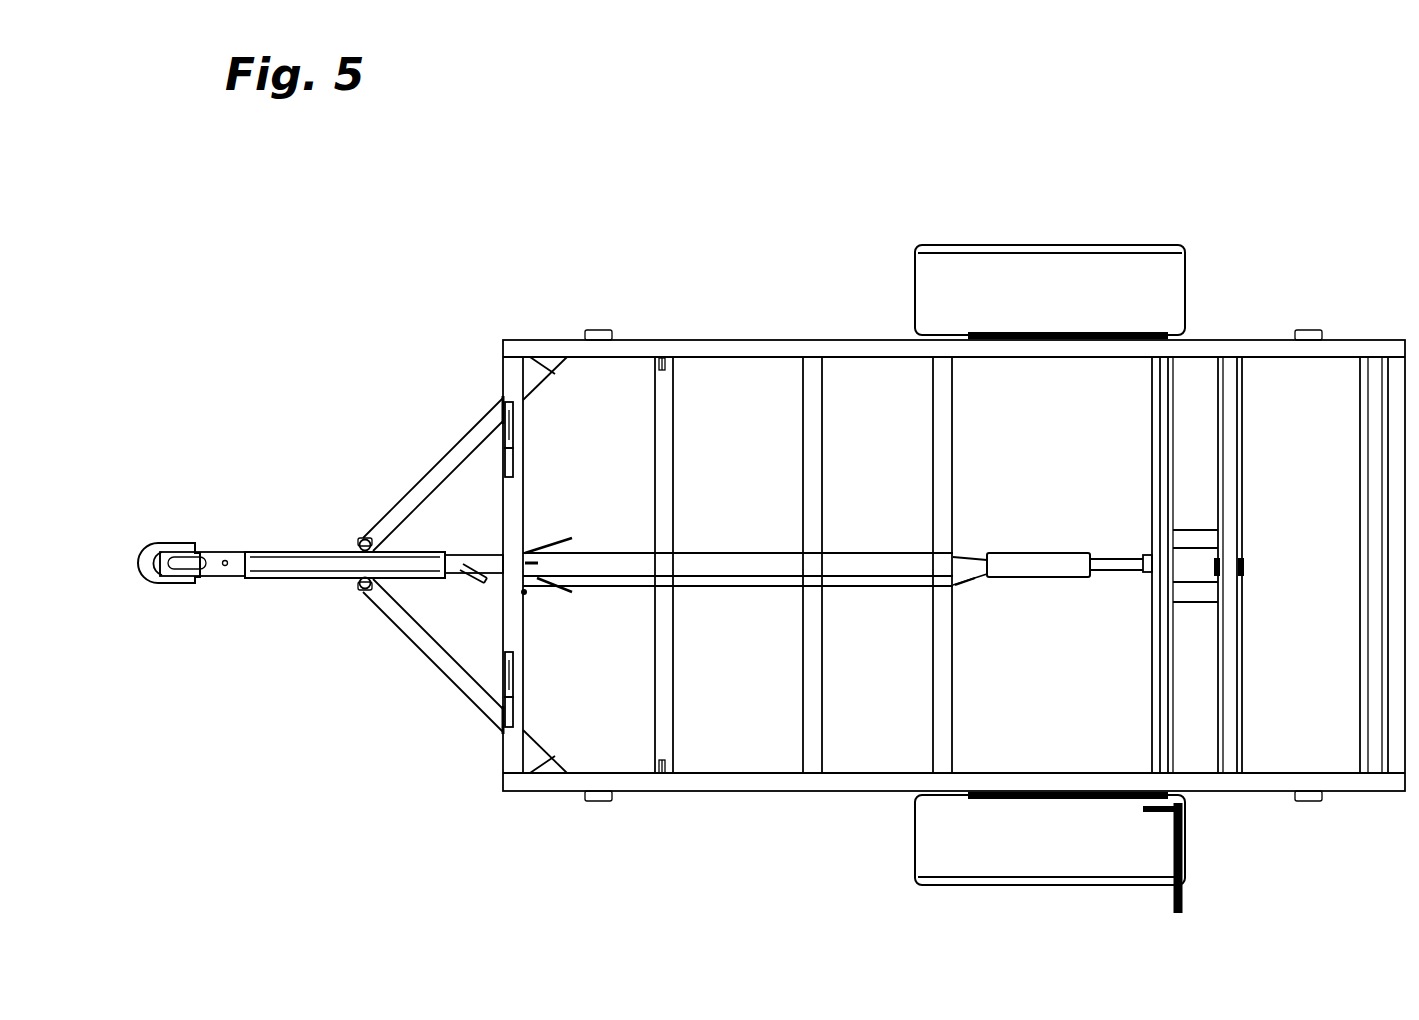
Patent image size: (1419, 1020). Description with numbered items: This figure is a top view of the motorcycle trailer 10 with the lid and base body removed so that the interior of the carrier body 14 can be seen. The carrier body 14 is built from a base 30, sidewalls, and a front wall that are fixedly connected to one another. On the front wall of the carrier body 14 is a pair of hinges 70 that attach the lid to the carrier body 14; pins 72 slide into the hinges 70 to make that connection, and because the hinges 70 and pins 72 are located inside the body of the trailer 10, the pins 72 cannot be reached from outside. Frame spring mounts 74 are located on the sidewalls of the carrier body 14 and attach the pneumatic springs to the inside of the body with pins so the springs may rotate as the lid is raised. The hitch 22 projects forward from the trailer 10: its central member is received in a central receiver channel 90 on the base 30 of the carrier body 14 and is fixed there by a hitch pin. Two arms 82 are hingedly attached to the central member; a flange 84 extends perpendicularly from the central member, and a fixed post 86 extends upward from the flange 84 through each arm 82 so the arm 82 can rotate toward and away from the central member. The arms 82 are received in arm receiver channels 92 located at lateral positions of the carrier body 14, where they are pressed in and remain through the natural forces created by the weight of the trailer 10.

The motorcycle trailer 10 is at (876, 133).
The carrier body 14 is at (1238, 271).
The hitch 22 is at (188, 622).
The base 30 is at (780, 823).
The hinges 70 is at (513, 456).
The pins 72 is at (503, 396).
The frame spring mounts 74 is at (668, 366).
The arms 82 is at (457, 458).
The flange 84 is at (356, 548).
The fixed post 86 is at (362, 538).
The central receiver channel 90 is at (728, 563).
The arm receiver channels 92 is at (556, 358).